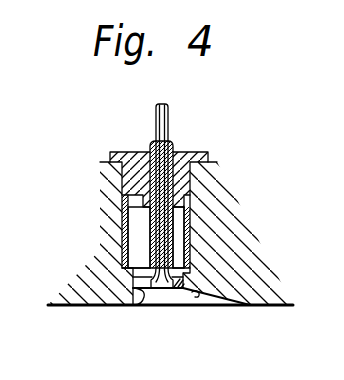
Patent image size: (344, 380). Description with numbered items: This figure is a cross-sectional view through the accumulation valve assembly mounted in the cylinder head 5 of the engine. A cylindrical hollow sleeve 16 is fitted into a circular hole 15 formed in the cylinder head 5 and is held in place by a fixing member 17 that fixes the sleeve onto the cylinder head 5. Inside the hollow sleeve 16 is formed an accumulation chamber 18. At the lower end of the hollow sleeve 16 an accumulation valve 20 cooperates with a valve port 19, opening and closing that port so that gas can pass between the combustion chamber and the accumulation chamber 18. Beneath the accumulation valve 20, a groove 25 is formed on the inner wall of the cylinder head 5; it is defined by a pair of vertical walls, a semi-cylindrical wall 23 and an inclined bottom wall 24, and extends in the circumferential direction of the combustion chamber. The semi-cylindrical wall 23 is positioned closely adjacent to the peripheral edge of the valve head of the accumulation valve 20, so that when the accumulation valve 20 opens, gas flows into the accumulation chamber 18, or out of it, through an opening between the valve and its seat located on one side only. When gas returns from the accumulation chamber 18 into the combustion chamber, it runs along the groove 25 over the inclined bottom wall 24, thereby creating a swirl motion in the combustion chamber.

The cylinder head 5 is at (63, 294).
The circular hole 15 is at (196, 208).
The hollow sleeve 16 is at (172, 240).
The fixing member 17 is at (180, 153).
The accumulation chamber 18 is at (208, 190).
The valve port 19 is at (121, 258).
The accumulation valve 20 is at (166, 222).
The semi-cylindrical wall 23 is at (140, 302).
The inclined bottom wall 24 is at (208, 279).
The groove 25 is at (180, 298).